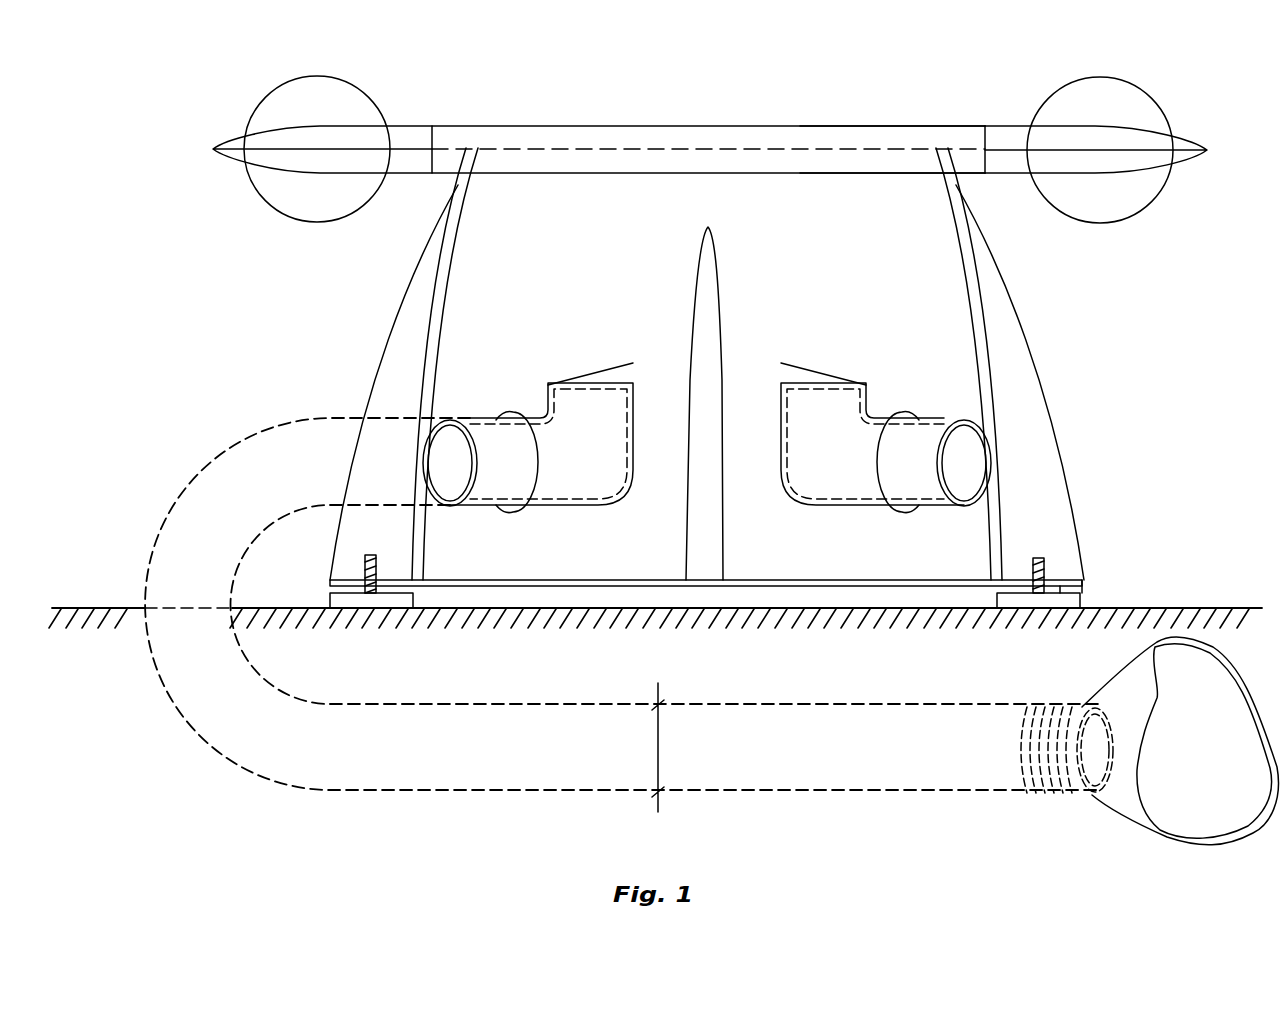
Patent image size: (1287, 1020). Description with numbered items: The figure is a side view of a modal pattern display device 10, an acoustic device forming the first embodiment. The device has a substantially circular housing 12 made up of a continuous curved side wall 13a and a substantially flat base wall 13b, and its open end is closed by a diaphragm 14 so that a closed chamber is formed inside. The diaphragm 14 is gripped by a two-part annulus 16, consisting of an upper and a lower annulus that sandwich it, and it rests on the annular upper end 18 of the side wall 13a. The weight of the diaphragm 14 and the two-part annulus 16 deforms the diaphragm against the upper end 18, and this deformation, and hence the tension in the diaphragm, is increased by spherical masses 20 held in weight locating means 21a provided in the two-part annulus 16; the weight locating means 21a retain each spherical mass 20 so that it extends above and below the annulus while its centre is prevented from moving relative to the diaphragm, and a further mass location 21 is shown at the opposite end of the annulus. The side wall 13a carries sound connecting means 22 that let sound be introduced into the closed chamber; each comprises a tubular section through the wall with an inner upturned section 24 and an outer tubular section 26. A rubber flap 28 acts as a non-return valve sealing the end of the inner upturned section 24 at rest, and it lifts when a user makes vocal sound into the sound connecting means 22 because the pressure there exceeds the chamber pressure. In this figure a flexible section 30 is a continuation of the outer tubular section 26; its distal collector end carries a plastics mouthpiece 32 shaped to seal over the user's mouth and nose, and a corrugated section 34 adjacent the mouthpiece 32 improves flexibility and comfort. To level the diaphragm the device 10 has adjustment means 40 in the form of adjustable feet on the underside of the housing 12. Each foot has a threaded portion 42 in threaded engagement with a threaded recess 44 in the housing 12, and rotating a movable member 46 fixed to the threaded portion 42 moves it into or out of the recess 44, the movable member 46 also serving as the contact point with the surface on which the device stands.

The modal pattern display device 10 is at (112, 203).
The housing 12 is at (963, 220).
The side wall 13a is at (955, 183).
The base wall 13b is at (640, 580).
The diaphragm 14 is at (728, 148).
The two-part annulus 16 is at (825, 137).
The upper end 18 is at (938, 148).
The spherical mass 20 is at (345, 95).
The nozzle end 21 is at (1200, 150).
The weight locating means 21a is at (238, 145).
The sound connecting means 22 is at (535, 453).
The inner upturned section 24 is at (577, 395).
The outer tubular section 26 is at (482, 463).
The rubber flap 28 is at (803, 377).
The flexible section 30 is at (232, 476).
The mouthpiece 32 is at (1193, 837).
The corrugated section 34 is at (1022, 773).
The adjustment means 40 is at (1082, 602).
The threaded portion 42 is at (1067, 590).
The threaded recess 44 is at (1047, 558).
The movable member 46 is at (1022, 606).